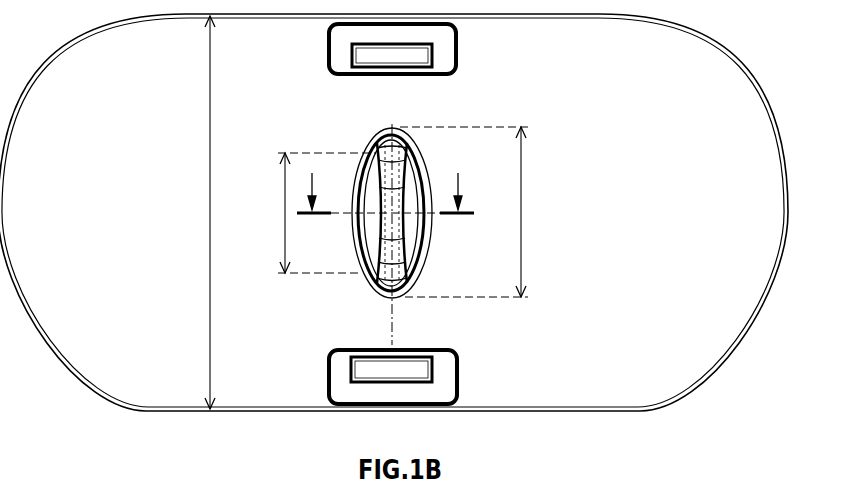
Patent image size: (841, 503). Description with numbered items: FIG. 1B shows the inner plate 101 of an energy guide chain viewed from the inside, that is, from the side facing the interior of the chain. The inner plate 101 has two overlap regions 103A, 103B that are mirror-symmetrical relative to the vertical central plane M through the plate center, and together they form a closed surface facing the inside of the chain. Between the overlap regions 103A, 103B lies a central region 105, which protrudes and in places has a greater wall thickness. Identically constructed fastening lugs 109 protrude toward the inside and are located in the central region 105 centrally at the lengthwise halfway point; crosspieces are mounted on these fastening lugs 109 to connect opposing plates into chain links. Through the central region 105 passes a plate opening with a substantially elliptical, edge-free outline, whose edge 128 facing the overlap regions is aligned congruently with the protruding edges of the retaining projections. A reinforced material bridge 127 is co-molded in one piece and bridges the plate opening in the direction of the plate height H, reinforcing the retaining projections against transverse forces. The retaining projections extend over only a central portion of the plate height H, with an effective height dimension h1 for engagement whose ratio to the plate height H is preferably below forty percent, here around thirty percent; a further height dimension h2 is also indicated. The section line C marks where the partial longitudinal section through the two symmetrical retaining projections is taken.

The inner plate 101 is at (748, 52).
The overlap region 103A is at (660, 163).
The overlap region 103B is at (90, 142).
The central region 105 is at (392, 193).
The fastening lug 109 is at (441, 40).
The material bridge 127 is at (397, 237).
The edge of the plate opening 128 is at (420, 165).
The vertical central plane M is at (392, 326).
The section line C- C is at (385, 193).
The plate height H is at (210, 333).
The effective height dimension h1 is at (314, 213).
The outer height h2 is at (521, 228).